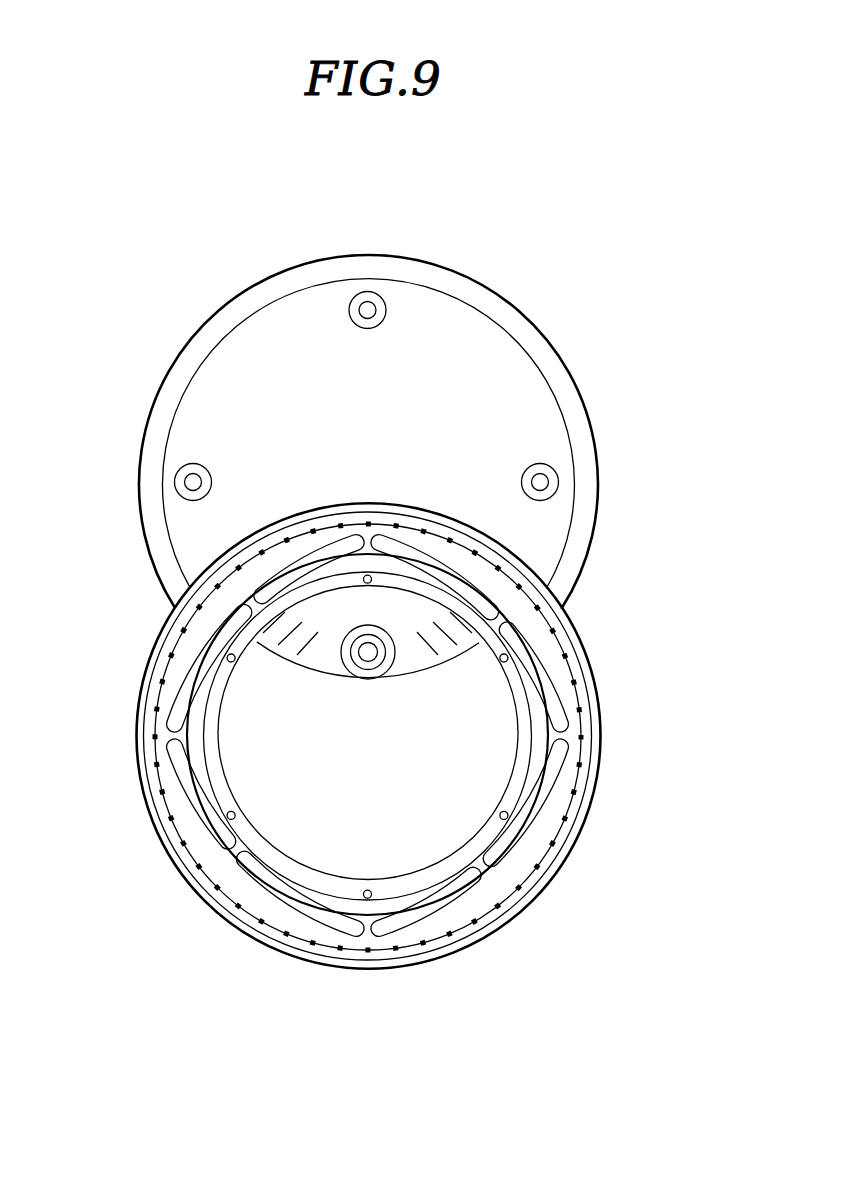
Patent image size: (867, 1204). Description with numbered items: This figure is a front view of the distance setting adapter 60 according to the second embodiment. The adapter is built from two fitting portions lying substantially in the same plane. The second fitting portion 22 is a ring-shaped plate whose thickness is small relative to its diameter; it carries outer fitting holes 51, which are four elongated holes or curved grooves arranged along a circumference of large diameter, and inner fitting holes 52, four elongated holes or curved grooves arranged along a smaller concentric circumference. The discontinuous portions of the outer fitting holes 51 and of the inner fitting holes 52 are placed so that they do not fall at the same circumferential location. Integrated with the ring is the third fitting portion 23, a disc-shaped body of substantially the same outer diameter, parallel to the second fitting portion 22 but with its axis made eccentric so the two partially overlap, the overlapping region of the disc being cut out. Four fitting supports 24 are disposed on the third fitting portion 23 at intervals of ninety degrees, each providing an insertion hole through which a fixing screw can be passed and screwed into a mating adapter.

The distance setting adapter 60 is at (521, 241).
The third fitting portion 23 is at (182, 366).
The fitting support 24 is at (365, 290).
The second fitting portion 22 is at (228, 927).
The outer fitting holes 51 is at (483, 898).
The inner fitting holes 52 is at (455, 892).